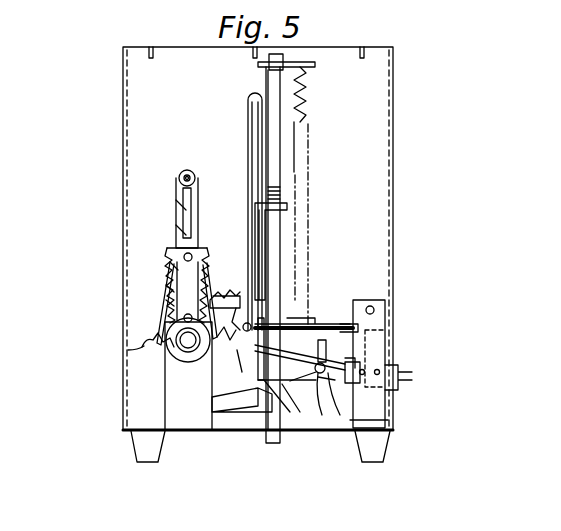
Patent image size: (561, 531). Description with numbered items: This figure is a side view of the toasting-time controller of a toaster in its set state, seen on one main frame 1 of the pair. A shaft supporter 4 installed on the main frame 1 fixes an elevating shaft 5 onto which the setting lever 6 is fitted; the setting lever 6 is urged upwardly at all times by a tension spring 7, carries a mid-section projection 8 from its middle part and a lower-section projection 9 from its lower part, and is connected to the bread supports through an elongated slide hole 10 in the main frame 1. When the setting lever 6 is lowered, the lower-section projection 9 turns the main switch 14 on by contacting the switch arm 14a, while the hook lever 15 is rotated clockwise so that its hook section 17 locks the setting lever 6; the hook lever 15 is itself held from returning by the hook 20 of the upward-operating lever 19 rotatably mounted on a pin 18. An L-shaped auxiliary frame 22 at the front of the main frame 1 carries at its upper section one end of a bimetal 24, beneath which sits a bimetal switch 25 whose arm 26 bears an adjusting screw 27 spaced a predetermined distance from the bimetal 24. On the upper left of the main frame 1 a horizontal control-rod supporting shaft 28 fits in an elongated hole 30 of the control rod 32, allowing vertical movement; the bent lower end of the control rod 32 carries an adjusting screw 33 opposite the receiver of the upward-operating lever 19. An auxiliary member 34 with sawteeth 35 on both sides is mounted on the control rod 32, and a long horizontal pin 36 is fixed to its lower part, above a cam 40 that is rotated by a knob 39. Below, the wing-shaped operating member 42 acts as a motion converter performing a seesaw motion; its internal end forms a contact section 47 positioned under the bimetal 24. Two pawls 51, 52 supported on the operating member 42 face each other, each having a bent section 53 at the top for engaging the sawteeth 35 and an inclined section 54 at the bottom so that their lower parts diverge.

The main frame 1 is at (135, 66).
The shaft supporter 4 is at (312, 63).
The elevating shaft 5 is at (274, 124).
The setting lever 6 is at (287, 206).
The tension spring 7 is at (304, 86).
The mid-section projection 8 is at (228, 292).
The lower-section projection 9 is at (282, 430).
The slide hole 10 is at (252, 100).
The main switch 14 is at (398, 374).
The switch arm 14a is at (360, 430).
The hook lever 15 is at (258, 300).
The hook section 17 is at (265, 300).
The pin 18 is at (322, 374).
The upward-operating lever 19 is at (345, 324).
The hook 20 is at (290, 302).
The L-shaped auxiliary frame 22 is at (378, 405).
The bimetal 24 is at (360, 320).
The bimetal switch 25 is at (355, 362).
The arm 26 is at (266, 400).
The adjusting screw 27 is at (244, 350).
The control-rod supporting shaft 28 is at (185, 170).
The elongated hole 30 is at (180, 200).
The control rod 32 is at (178, 225).
The adjusting screw 33 is at (219, 171).
The auxiliary member 34 is at (165, 275).
The sawteeth 35 is at (170, 258).
The pin 36 is at (150, 335).
The knob 39 is at (177, 350).
The cam 40 is at (178, 362).
The operating member 42 is at (144, 346).
The contact section 47 is at (212, 400).
The pawl 51 is at (164, 290).
The pawl 52 is at (207, 250).
The bent section 53 is at (165, 262).
The inclined section 54 is at (165, 305).